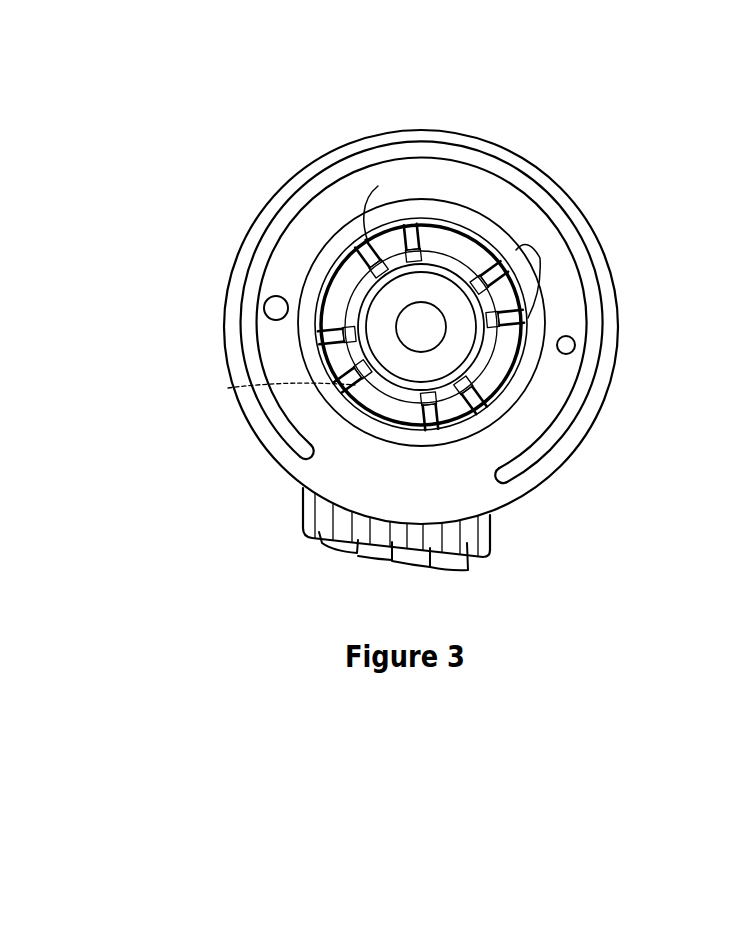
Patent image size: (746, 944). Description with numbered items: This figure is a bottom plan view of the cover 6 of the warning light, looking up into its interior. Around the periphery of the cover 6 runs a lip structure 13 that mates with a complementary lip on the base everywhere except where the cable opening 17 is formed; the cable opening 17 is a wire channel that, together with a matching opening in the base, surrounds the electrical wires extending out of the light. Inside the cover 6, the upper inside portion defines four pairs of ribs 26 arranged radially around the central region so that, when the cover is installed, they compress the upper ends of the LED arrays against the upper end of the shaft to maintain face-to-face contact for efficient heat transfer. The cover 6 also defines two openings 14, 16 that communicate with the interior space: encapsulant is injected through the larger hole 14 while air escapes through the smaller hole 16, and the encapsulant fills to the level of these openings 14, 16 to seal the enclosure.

The cover 6 is at (237, 186).
The lip structure 13 is at (503, 165).
The opening 14 is at (268, 306).
The opening 16 is at (567, 336).
The cable opening 17 is at (467, 558).
The ribs 26 is at (407, 237).